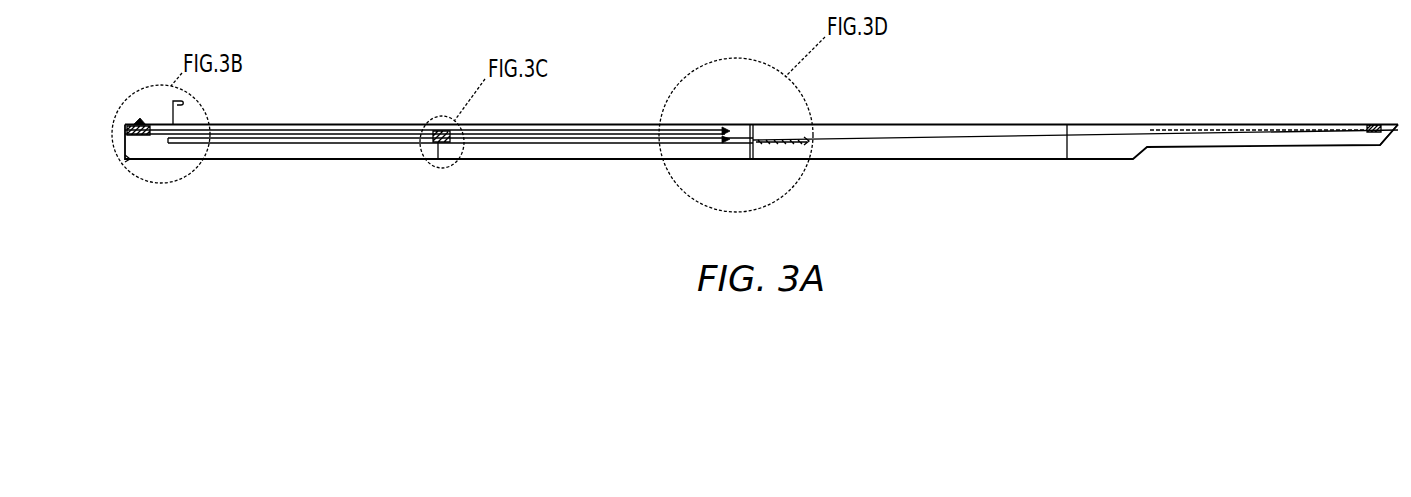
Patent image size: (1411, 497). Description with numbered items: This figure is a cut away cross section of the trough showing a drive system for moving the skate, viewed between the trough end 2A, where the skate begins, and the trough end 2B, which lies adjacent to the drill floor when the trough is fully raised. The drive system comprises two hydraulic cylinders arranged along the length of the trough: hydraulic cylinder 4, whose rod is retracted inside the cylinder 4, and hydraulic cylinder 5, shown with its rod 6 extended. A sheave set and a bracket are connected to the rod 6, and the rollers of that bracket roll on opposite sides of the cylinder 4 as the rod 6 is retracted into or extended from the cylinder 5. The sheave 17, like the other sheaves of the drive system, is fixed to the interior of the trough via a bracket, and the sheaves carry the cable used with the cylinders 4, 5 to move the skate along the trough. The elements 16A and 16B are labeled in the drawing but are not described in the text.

The trough end 2A is at (130, 125).
The trough end 2B is at (1398, 124).
The hydraulic cylinder 4 is at (533, 132).
The hydraulic cylinder 5 is at (347, 143).
The rod 6 is at (552, 145).
The first beam section 16A is at (306, 127).
The second beam section 16B is at (934, 137).
The sheave 17 is at (1372, 132).